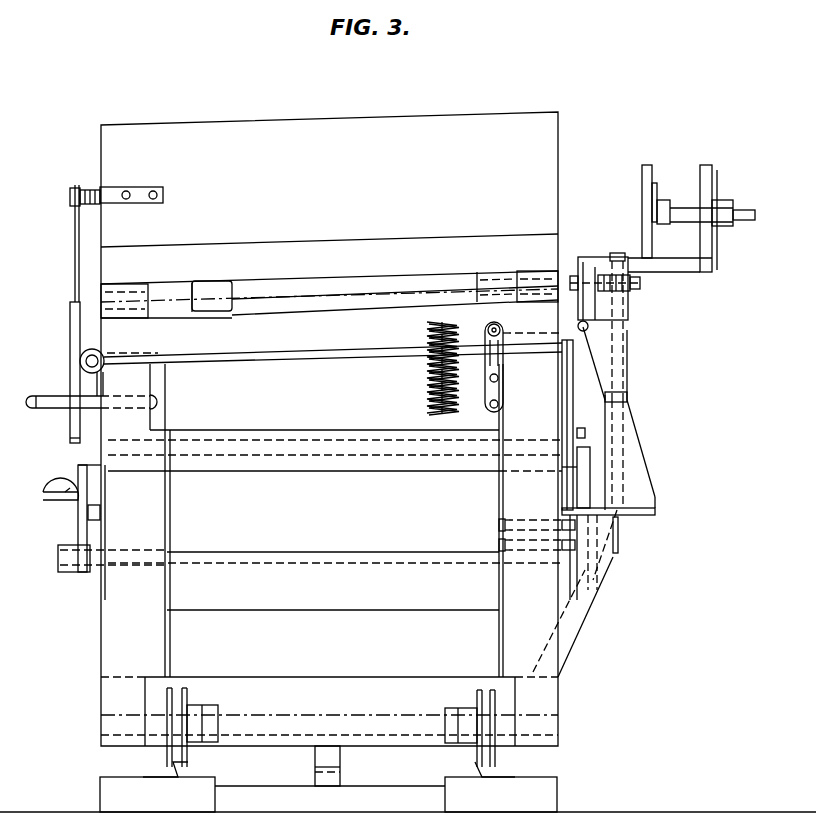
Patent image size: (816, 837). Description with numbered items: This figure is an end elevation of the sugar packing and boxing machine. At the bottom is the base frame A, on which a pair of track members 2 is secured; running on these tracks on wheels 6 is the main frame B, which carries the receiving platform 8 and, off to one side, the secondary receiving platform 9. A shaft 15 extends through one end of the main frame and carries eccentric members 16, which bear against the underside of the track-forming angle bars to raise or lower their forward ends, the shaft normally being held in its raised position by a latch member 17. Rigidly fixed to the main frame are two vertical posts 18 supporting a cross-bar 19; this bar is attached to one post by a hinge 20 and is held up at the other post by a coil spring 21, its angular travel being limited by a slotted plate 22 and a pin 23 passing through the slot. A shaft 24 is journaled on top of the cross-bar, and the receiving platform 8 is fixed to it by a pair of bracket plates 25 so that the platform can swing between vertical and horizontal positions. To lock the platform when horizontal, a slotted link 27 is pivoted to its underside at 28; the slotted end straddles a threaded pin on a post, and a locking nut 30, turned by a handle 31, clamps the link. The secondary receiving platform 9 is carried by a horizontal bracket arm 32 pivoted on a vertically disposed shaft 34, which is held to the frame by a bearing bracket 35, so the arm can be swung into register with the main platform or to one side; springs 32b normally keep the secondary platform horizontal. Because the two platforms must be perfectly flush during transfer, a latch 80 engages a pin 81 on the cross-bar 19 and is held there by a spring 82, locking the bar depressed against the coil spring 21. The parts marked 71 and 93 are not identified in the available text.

The track members 2 is at (408, 794).
The wheels 6 is at (165, 757).
The receiving platform 8 is at (329, 429).
The secondary receiving platform 9 is at (600, 257).
The shaft 15 is at (58, 555).
The eccentric members 16 is at (78, 528).
The latch member 17 is at (86, 513).
The posts 18 is at (331, 555).
The cross-bar 19 is at (397, 368).
The hinge 20 is at (80, 361).
The coil spring 21 is at (427, 353).
The slotted plate 22 is at (504, 357).
The pin 23 is at (500, 327).
The shaft 24 is at (297, 300).
The bracket plates 25 is at (130, 302).
The slotted link 27 is at (70, 337).
The pivot 28 is at (70, 197).
The locking nut 30 is at (63, 409).
The handle 31 is at (34, 409).
The bracket arm 32 is at (603, 337).
The springs 32b is at (640, 285).
The vertically disposed shaft 34 is at (625, 355).
The bearing bracket 35 is at (633, 466).
The block 71 is at (327, 766).
The latch 80 is at (570, 372).
The pin 81 is at (590, 327).
The spring 82 is at (572, 392).
The crank 93 is at (642, 211).
The base frame A is at (330, 795).
The main frame B is at (331, 697).